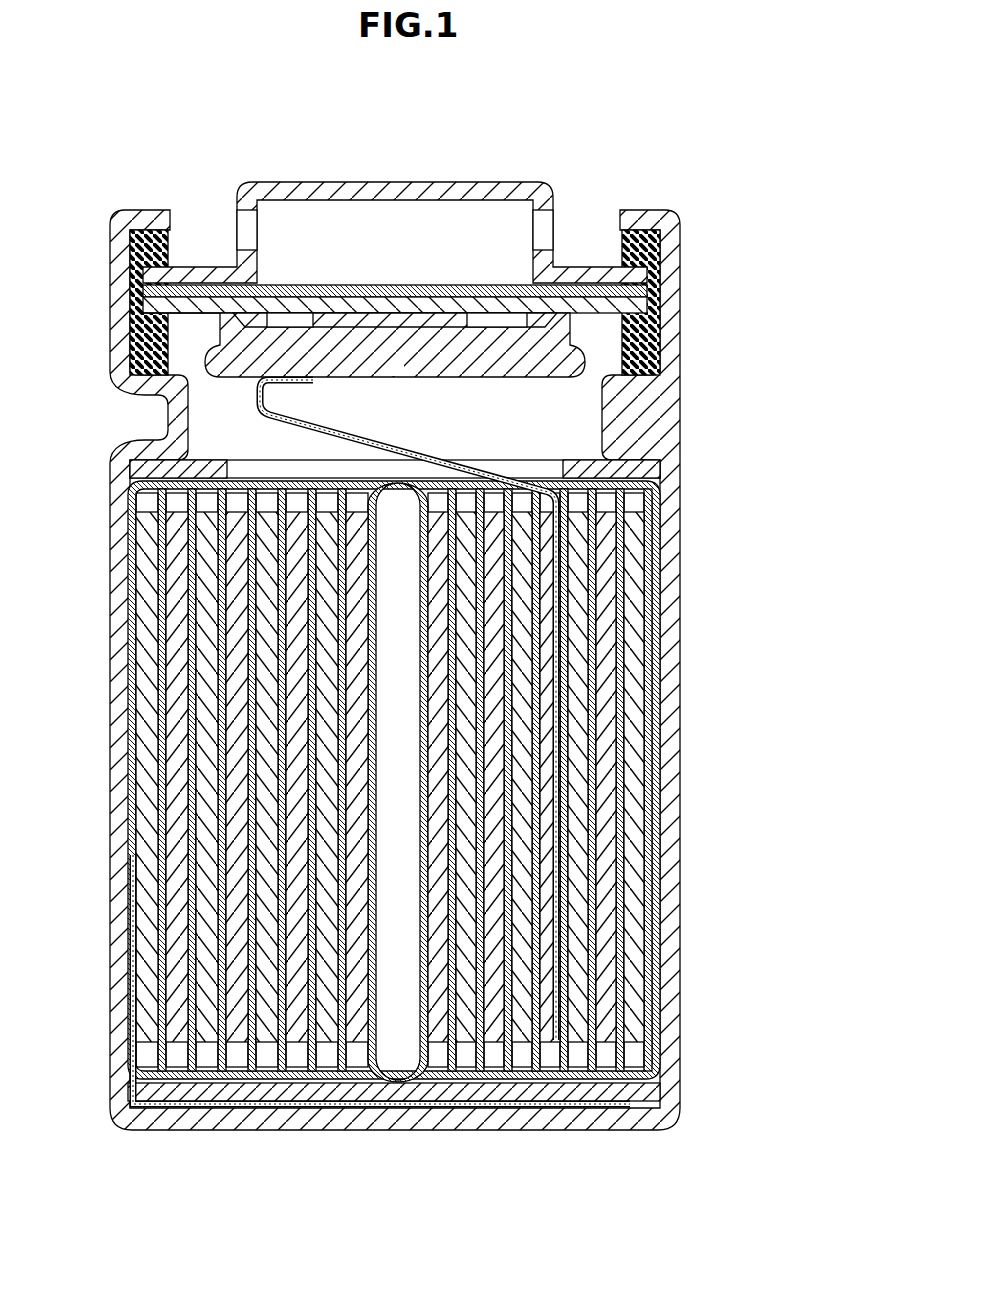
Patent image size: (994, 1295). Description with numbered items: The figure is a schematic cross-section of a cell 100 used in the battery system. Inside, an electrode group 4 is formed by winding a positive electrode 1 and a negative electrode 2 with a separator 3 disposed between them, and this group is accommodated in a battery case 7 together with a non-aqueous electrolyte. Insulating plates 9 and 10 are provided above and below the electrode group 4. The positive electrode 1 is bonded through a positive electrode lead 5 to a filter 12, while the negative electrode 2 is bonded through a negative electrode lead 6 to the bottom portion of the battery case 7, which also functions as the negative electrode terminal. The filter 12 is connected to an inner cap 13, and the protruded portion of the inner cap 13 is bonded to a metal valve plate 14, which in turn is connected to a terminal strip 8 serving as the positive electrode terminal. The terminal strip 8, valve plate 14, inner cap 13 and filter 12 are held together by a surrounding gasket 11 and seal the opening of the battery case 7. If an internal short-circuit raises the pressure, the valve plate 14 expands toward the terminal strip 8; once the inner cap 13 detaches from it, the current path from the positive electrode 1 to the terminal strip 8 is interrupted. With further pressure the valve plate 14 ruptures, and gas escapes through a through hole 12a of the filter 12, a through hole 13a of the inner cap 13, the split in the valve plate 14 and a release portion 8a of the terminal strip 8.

The cell 100 is at (641, 126).
The positive electrode 1 is at (615, 806).
The negative electrode 2 is at (643, 770).
The separator 3 is at (663, 723).
The electrode group 4 is at (468, 781).
The positive electrode lead 5 is at (270, 415).
The negative electrode lead 6 is at (423, 1108).
The battery case 7 is at (118, 688).
The terminal strip 8 is at (490, 182).
The release portion 8a is at (556, 240).
The insulating plate 9 is at (660, 470).
The insulating plate 10 is at (658, 1090).
The gasket 11 is at (683, 252).
The filter 12 is at (665, 355).
The through hole 12a is at (397, 367).
The inner cap 13 is at (300, 317).
The through hole 13a is at (282, 287).
The valve plate 14 is at (257, 270).